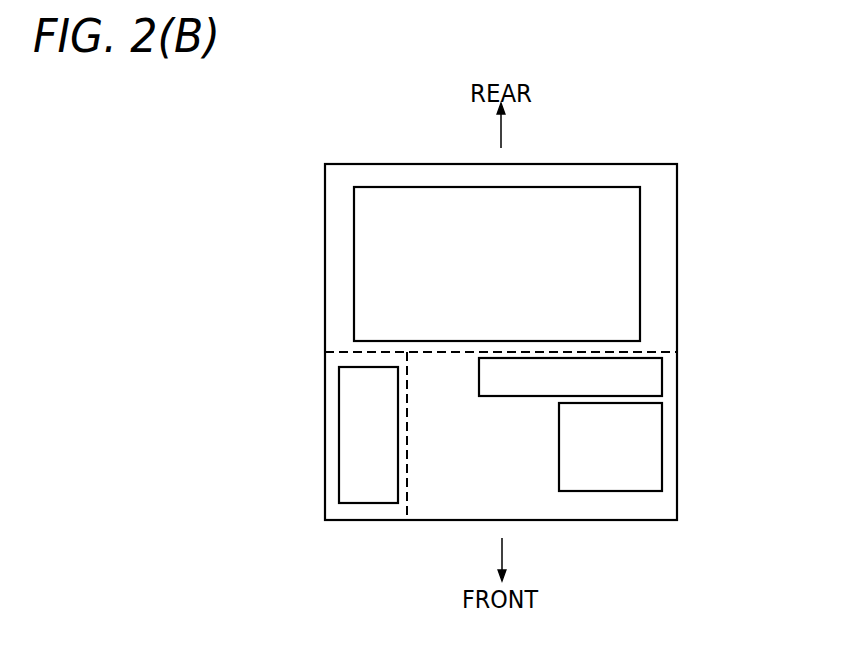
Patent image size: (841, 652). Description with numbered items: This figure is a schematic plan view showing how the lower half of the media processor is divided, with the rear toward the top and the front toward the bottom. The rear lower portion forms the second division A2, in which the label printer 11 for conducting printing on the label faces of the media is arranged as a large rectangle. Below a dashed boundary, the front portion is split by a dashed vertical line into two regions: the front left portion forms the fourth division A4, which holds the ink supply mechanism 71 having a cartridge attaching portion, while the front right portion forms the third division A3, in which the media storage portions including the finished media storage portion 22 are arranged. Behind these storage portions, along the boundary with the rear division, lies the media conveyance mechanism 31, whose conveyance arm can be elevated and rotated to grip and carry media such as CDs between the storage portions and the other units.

The label printer 11 is at (575, 201).
The second division A2 is at (664, 255).
The media conveyance mechanism 31 is at (653, 376).
The finished media storage portion 22 is at (650, 452).
The ink supply mechanism 71 is at (355, 439).
The third division A3 is at (627, 510).
The fourth division A4 is at (350, 514).